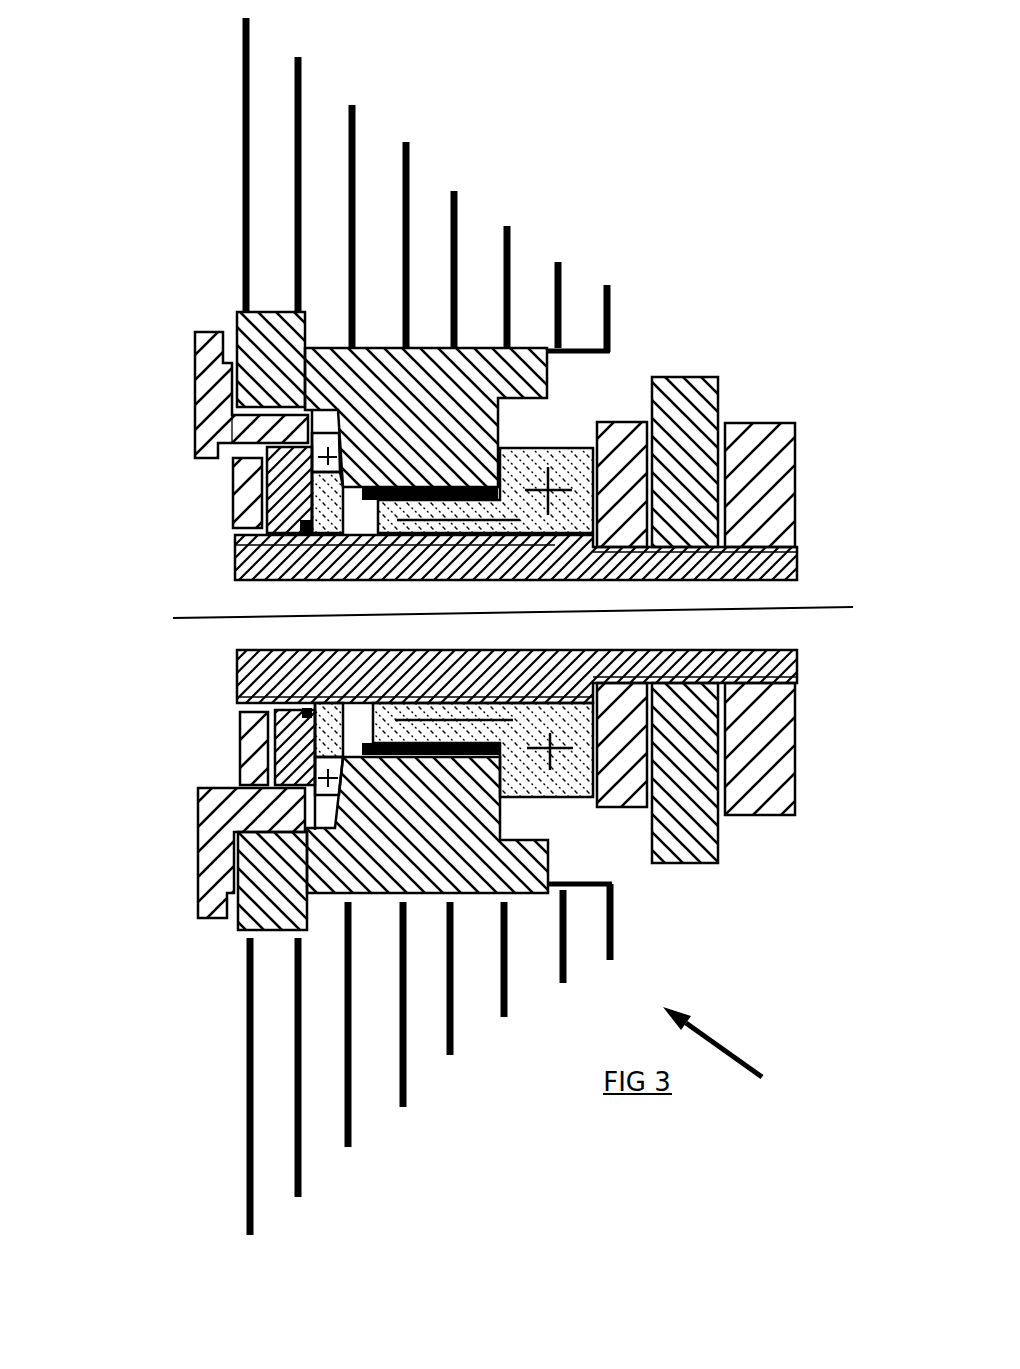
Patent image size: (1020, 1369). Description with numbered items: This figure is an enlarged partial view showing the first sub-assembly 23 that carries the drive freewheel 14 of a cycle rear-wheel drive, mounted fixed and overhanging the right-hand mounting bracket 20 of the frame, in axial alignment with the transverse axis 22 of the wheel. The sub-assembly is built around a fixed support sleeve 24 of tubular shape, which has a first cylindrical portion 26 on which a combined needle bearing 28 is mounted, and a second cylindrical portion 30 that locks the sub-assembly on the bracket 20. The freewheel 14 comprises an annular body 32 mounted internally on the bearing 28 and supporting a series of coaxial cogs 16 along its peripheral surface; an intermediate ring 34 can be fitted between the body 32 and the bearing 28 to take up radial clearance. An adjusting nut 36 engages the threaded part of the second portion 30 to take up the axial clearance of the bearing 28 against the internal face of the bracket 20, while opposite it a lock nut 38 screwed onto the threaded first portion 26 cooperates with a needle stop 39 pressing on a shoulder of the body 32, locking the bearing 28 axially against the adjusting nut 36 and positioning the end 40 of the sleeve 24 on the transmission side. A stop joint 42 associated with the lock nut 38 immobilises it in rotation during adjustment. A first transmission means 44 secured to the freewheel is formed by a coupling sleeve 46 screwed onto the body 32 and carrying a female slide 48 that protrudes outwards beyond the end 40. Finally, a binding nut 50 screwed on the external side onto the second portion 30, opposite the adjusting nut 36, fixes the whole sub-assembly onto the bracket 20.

The freewheel 14 is at (522, 190).
The coaxial cogs 16 is at (355, 1118).
The right-hand mounting bracket 20 is at (702, 863).
The transverse axis 22 is at (203, 618).
The first sub-assembly 23 is at (768, 1113).
The fixed support sleeve 24 is at (240, 712).
The first cylindrical portion 26 is at (470, 683).
The combined needle bearing 28 is at (530, 462).
The second cylindrical portion 30 is at (707, 667).
The annular body 32 is at (462, 378).
The intermediate ring 34 is at (440, 500).
The adjusting nut 36 is at (630, 810).
The lock nut 38 is at (233, 517).
The needle stop 39 is at (233, 548).
The end of the sleeve 40 is at (240, 588).
The stop joint 42 is at (305, 528).
The first transmission means 44 is at (190, 370).
The coupling sleeve 46 is at (193, 433).
The female slide 48 is at (222, 462).
The binding nut 50 is at (778, 815).